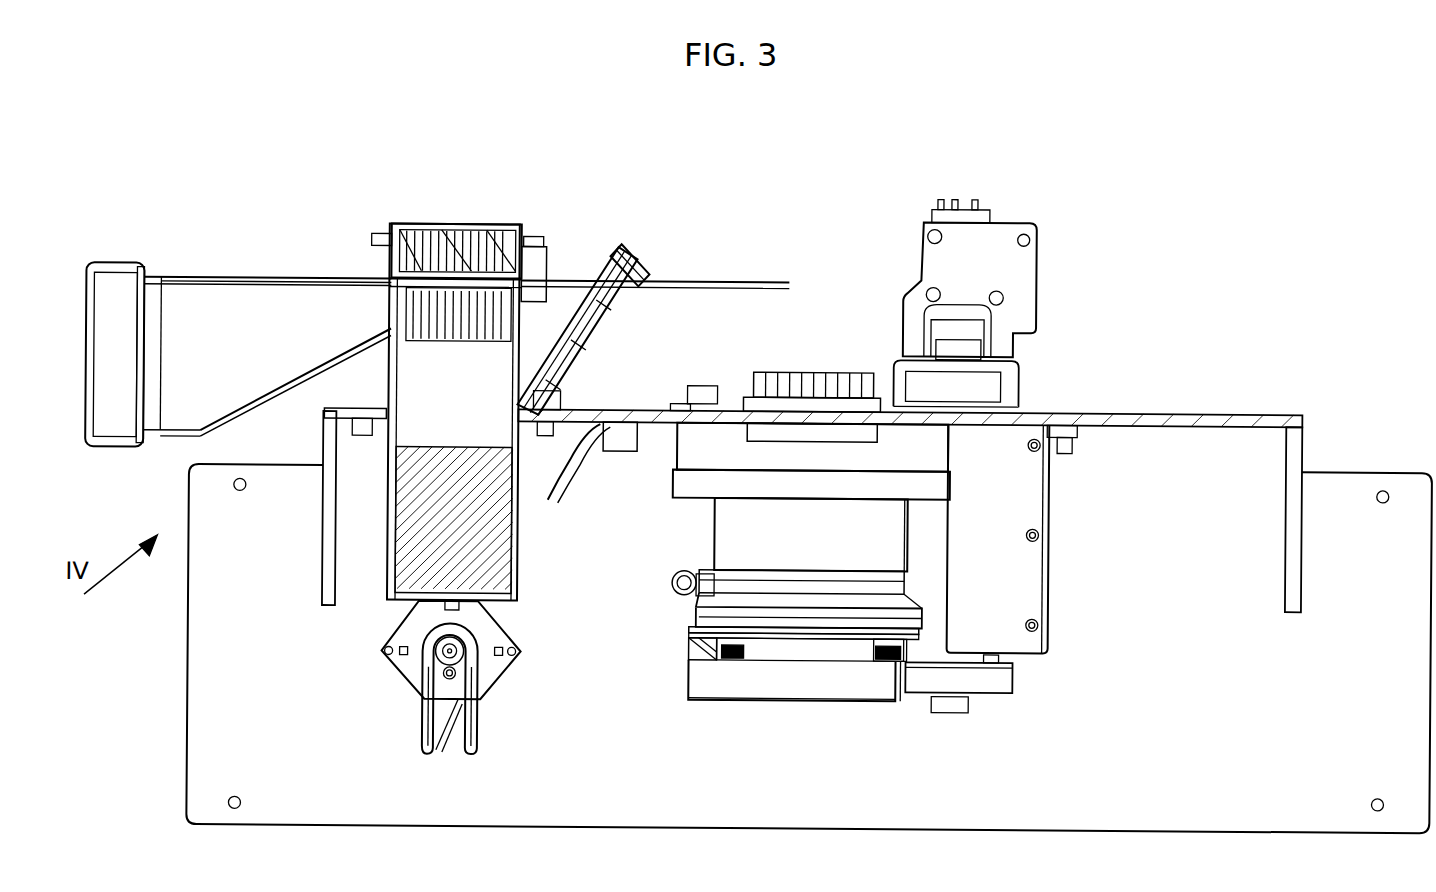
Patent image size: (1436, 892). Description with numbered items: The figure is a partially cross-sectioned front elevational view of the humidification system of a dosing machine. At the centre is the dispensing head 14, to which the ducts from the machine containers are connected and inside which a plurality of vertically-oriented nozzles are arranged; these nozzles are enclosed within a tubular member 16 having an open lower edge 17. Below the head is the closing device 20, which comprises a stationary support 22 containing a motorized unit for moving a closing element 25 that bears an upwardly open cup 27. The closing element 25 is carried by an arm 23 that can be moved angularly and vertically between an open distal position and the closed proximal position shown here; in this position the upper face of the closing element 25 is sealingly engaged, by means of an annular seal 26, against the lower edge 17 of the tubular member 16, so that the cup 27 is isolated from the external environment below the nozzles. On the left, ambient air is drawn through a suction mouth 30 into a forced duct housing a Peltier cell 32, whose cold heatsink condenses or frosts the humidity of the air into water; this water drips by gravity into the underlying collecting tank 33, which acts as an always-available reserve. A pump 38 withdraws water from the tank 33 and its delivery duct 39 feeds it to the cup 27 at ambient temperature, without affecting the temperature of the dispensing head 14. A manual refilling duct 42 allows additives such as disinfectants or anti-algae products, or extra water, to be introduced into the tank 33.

The dispensing head 14 is at (665, 522).
The tubular member 16 is at (892, 518).
The lower edge 17 is at (808, 636).
The closing device 20 is at (666, 686).
The stationary support 22 is at (1027, 496).
The arm 23 is at (970, 671).
The closing element 25 is at (923, 632).
The annular seal 26 is at (732, 656).
The cup 27 is at (860, 643).
The suction mouth 30 is at (243, 297).
The Peltier cell 32 is at (470, 216).
The collecting tank 33 is at (386, 491).
The pump 38 is at (400, 673).
The delivery duct 39 is at (431, 748).
The manual refilling duct 42 is at (605, 255).